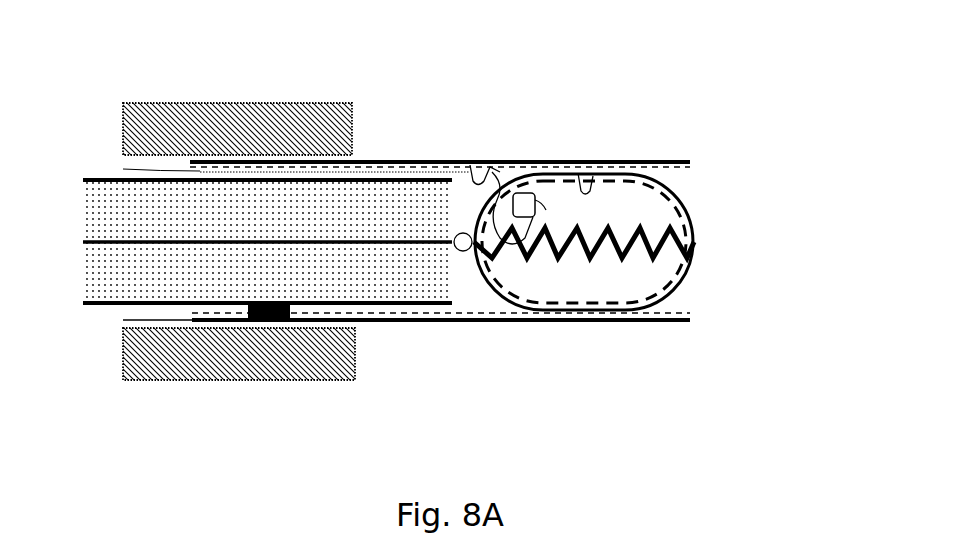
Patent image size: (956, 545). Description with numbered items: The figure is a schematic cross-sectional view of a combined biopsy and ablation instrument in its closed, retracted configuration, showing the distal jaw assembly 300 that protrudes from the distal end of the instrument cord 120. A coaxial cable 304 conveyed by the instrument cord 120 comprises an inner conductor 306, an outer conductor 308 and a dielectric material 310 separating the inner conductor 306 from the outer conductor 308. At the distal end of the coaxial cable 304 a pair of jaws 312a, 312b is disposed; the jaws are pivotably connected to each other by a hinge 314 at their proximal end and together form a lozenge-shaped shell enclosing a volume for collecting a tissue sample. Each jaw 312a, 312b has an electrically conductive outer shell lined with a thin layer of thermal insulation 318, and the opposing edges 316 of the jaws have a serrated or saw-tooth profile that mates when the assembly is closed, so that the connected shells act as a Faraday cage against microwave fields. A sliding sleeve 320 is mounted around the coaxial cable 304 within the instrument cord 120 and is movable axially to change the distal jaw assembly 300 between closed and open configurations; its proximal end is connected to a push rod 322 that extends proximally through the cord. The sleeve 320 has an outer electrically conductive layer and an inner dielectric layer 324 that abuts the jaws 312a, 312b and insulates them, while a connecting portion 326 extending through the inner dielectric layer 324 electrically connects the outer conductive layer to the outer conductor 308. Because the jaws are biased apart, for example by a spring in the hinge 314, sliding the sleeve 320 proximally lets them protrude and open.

The instrument cord 120 is at (273, 110).
The distal jaw assembly 300 is at (698, 125).
The coaxial cable 304 is at (106, 288).
The inner conductor 306 is at (397, 243).
The outer conductor 308 is at (352, 303).
The dielectric material 310 is at (428, 283).
The jaw 312a is at (687, 208).
The jaw 312b is at (683, 283).
The hinge 314 is at (466, 250).
The opposing edges 316 is at (597, 253).
The layer of thermal insulation 318 is at (589, 188).
The sliding sleeve 320 is at (468, 157).
The push rod 322 is at (208, 322).
The inner dielectric layer 324 is at (492, 172).
The connecting portion 326 is at (262, 322).